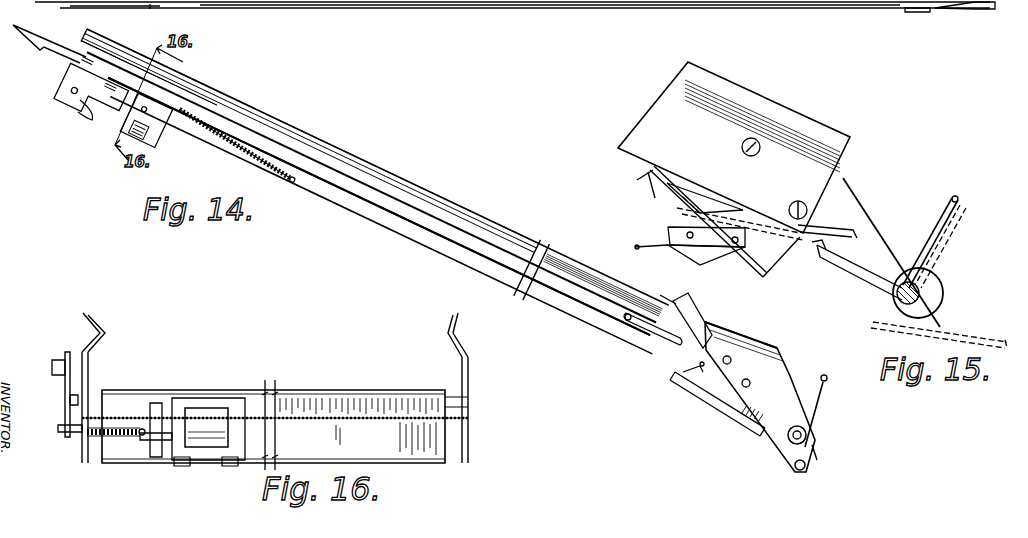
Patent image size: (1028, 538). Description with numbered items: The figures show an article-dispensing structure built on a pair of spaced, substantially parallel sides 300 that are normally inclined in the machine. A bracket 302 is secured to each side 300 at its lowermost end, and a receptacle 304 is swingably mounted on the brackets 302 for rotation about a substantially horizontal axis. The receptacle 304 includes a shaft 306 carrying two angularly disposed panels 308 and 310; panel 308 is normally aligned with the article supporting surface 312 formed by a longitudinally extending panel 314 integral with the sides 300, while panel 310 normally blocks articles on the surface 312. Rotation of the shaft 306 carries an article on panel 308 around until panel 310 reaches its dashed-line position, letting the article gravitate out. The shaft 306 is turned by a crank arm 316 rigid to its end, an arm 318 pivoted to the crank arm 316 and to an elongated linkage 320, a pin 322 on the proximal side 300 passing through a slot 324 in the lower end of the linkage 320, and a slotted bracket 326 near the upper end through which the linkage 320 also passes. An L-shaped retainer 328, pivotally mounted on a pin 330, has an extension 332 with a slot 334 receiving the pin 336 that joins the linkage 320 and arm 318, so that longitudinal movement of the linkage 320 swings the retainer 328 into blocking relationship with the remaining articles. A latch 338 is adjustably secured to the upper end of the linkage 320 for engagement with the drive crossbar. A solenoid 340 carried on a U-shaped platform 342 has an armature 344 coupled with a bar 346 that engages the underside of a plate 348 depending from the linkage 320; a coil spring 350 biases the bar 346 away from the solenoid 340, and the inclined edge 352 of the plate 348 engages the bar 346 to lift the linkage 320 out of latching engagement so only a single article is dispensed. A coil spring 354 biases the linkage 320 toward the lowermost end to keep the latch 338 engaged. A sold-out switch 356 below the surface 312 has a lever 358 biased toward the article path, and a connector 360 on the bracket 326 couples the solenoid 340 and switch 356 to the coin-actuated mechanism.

In FIG. 13, the side 300 is at (512, 9).
In FIG. 14, the side 300 is at (577, 254).
In FIG. 16, the side 300 is at (100, 320).
In FIG. 13, the bracket 302 is at (978, 10).
In FIG. 14, the bracket 302 is at (804, 384).
In FIG. 15, the bracket 302 is at (880, 228).
In FIG. 15, the receptacle 304 is at (944, 197).
In FIG. 15, the shaft 306 is at (937, 280).
In FIG. 15, the panel 308 is at (840, 280).
In FIG. 15, the panel 310 is at (950, 230).
In FIG. 16, the article supporting surface 312 is at (338, 408).
In FIG. 16, the longitudinally extending panel 314 is at (358, 420).
In FIG. 14, the crank arm 316 is at (812, 445).
In FIG. 13, the arm 318 is at (918, 13).
In FIG. 14, the arm 318 is at (770, 440).
In FIG. 13, the linkage 320 is at (775, 9).
In FIG. 14, the linkage 320 is at (458, 237).
In FIG. 14, the pin 322 is at (625, 320).
In FIG. 14, the slot 324 is at (660, 340).
In FIG. 14, the bracket 326 is at (173, 88).
In FIG. 14, the retainer 328 is at (722, 432).
In FIG. 15, the retainer 328 is at (845, 178).
In FIG. 14, the pin 330 is at (697, 397).
In FIG. 14, the extension 332 is at (690, 305).
In FIG. 14, the slot 334 is at (674, 300).
In FIG. 14, the pin 336 is at (728, 330).
In FIG. 14, the latch 338 is at (43, 44).
In FIG. 16, the solenoid 340 is at (206, 400).
In FIG. 16, the U-shaped platform 342 is at (140, 465).
In FIG. 16, the armature 344 is at (156, 401).
In FIG. 16, the bar 346 is at (62, 440).
In FIG. 14, the plate 348 is at (80, 85).
In FIG. 16, the coil spring 350 is at (115, 438).
In FIG. 14, the inclined edge 352 is at (88, 108).
In FIG. 13, the coil spring 354 is at (260, 9).
In FIG. 14, the coil spring 354 is at (248, 157).
In FIG. 15, the sold-out switch 356 is at (638, 244).
In FIG. 15, the lever 358 is at (838, 230).
In FIG. 14, the connector 360 is at (156, 136).